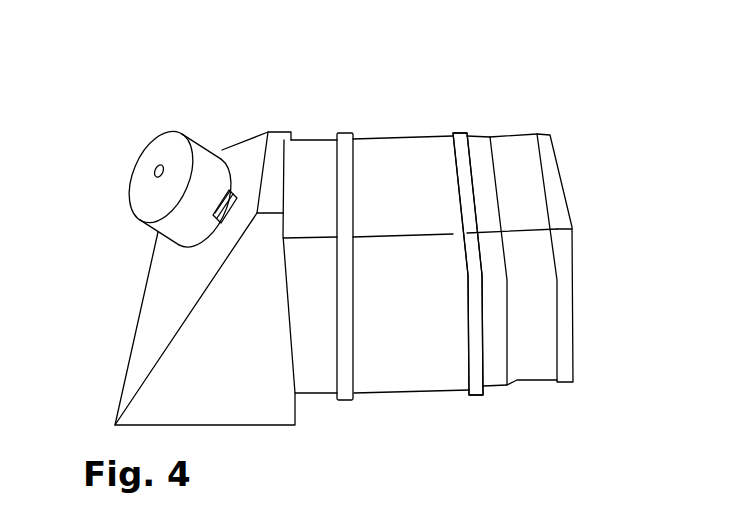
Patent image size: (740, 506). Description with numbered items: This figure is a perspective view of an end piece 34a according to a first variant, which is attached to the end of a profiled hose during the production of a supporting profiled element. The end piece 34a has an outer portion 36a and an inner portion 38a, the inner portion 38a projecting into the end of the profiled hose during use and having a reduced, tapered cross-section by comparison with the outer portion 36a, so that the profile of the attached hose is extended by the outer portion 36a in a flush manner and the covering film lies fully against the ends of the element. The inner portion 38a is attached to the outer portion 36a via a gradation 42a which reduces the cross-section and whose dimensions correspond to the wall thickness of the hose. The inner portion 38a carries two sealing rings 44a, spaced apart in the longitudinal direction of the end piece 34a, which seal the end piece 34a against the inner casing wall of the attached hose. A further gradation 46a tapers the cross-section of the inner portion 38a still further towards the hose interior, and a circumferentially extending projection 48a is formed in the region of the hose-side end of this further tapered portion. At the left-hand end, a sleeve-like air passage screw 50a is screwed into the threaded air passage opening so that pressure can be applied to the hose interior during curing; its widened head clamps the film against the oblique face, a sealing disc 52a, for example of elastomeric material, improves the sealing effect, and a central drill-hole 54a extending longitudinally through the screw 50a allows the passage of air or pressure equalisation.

The end piece 34a is at (239, 38).
The outer portion 36a is at (141, 325).
The inner portion 38a is at (407, 141).
The gradation 42a is at (299, 128).
The sealing rings 44a is at (345, 295).
The further gradation 46a is at (496, 128).
The projection 48a is at (563, 268).
The air passage screw 50a is at (201, 143).
The sealing disc 52a is at (188, 231).
The central drill-hole 54a is at (156, 166).